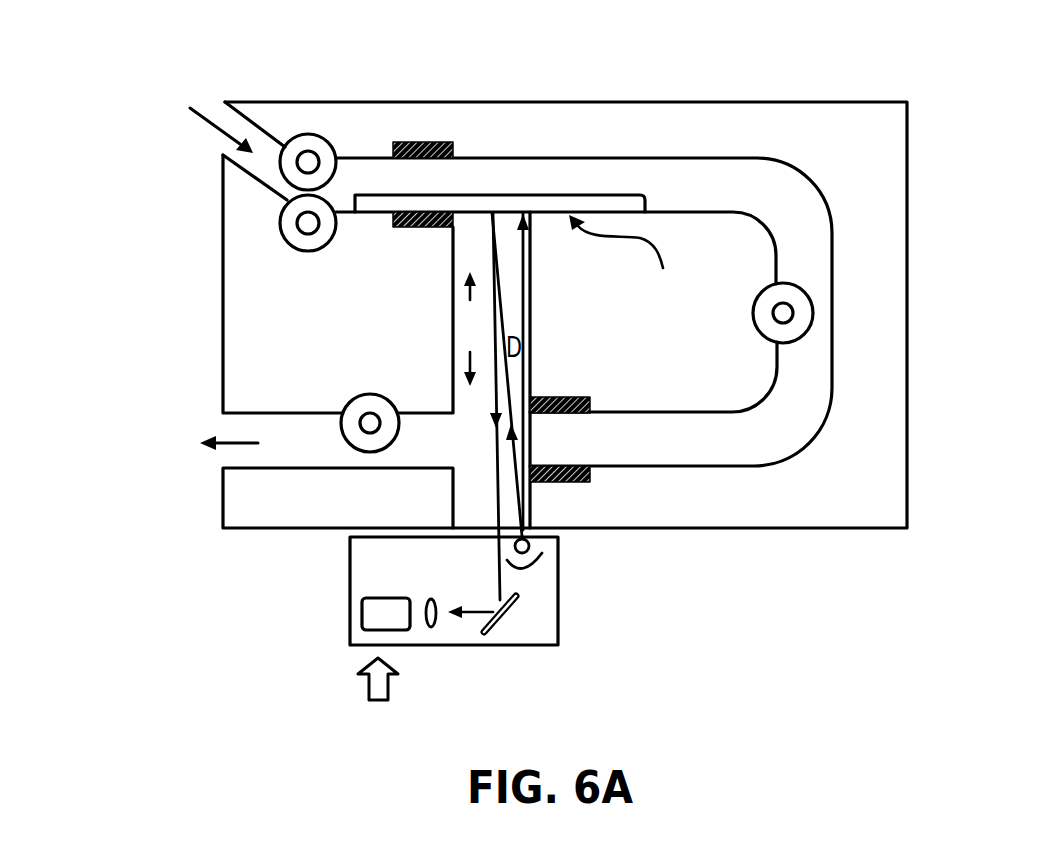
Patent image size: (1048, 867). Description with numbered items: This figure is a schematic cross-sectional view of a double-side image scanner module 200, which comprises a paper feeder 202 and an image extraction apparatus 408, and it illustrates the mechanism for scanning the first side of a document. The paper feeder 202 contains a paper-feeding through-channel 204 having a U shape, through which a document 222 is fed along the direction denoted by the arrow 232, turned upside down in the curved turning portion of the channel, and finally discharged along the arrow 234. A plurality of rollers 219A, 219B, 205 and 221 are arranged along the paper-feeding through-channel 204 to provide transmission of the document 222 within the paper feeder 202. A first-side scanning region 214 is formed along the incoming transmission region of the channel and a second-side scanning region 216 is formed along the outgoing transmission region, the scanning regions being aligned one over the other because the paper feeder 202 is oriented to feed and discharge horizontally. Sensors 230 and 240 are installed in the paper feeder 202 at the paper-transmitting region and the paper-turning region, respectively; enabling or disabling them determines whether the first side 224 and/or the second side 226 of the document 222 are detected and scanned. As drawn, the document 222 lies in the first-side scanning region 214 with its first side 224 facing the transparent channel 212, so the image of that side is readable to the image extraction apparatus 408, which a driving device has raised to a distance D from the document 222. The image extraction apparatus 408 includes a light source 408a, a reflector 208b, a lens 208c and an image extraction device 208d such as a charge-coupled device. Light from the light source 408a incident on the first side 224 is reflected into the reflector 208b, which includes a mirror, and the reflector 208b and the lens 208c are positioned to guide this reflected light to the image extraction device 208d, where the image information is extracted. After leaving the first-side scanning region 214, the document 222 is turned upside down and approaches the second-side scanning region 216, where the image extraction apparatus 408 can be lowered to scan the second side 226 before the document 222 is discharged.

The double-side image scanner module 200 is at (200, 310).
The paper feeder 202 is at (908, 297).
The paper-feeding through-channel 204 is at (697, 180).
The roller 205 is at (795, 283).
The transparent channel 212 is at (476, 329).
The first-side scanning region 214 is at (652, 312).
The second-side scanning region 216 is at (340, 441).
The roller 219A is at (327, 152).
The roller 219B is at (300, 242).
The roller 221 is at (373, 404).
The document 222 is at (645, 203).
The first side 224 is at (633, 261).
The second side 226 is at (504, 184).
The sensor 230 is at (403, 228).
The arrow 232 is at (194, 122).
The arrow 234 is at (197, 445).
The sensor 240 is at (567, 483).
The image extraction apparatus 408 is at (560, 587).
The light source 408a is at (546, 563).
The reflector 208b is at (517, 612).
The lens 208c is at (432, 628).
The image extraction device 208d is at (362, 613).